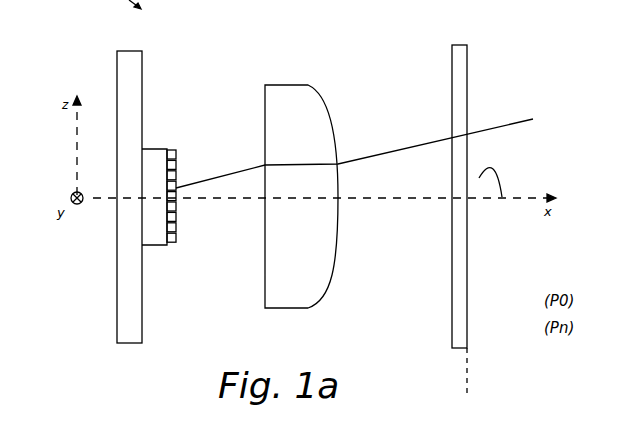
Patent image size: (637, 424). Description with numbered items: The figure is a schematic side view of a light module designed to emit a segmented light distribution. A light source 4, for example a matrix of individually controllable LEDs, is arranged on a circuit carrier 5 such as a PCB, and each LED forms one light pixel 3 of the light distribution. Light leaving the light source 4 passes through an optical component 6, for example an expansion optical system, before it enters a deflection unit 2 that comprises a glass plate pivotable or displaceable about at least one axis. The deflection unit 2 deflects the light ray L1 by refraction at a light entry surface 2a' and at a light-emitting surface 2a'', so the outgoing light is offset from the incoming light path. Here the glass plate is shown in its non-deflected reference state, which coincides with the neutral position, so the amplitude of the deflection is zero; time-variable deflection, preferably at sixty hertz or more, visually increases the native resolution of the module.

The deflection unit 2 is at (462, 72).
The light pixel 3 is at (176, 219).
The light source 4 is at (150, 153).
The circuit carrier 5 is at (127, 97).
The optical component 6 is at (308, 108).
The light ray L1 is at (467, 158).
The light entry surface 2a' is at (411, 313).
The light-emitting surface 2a'' is at (509, 257).